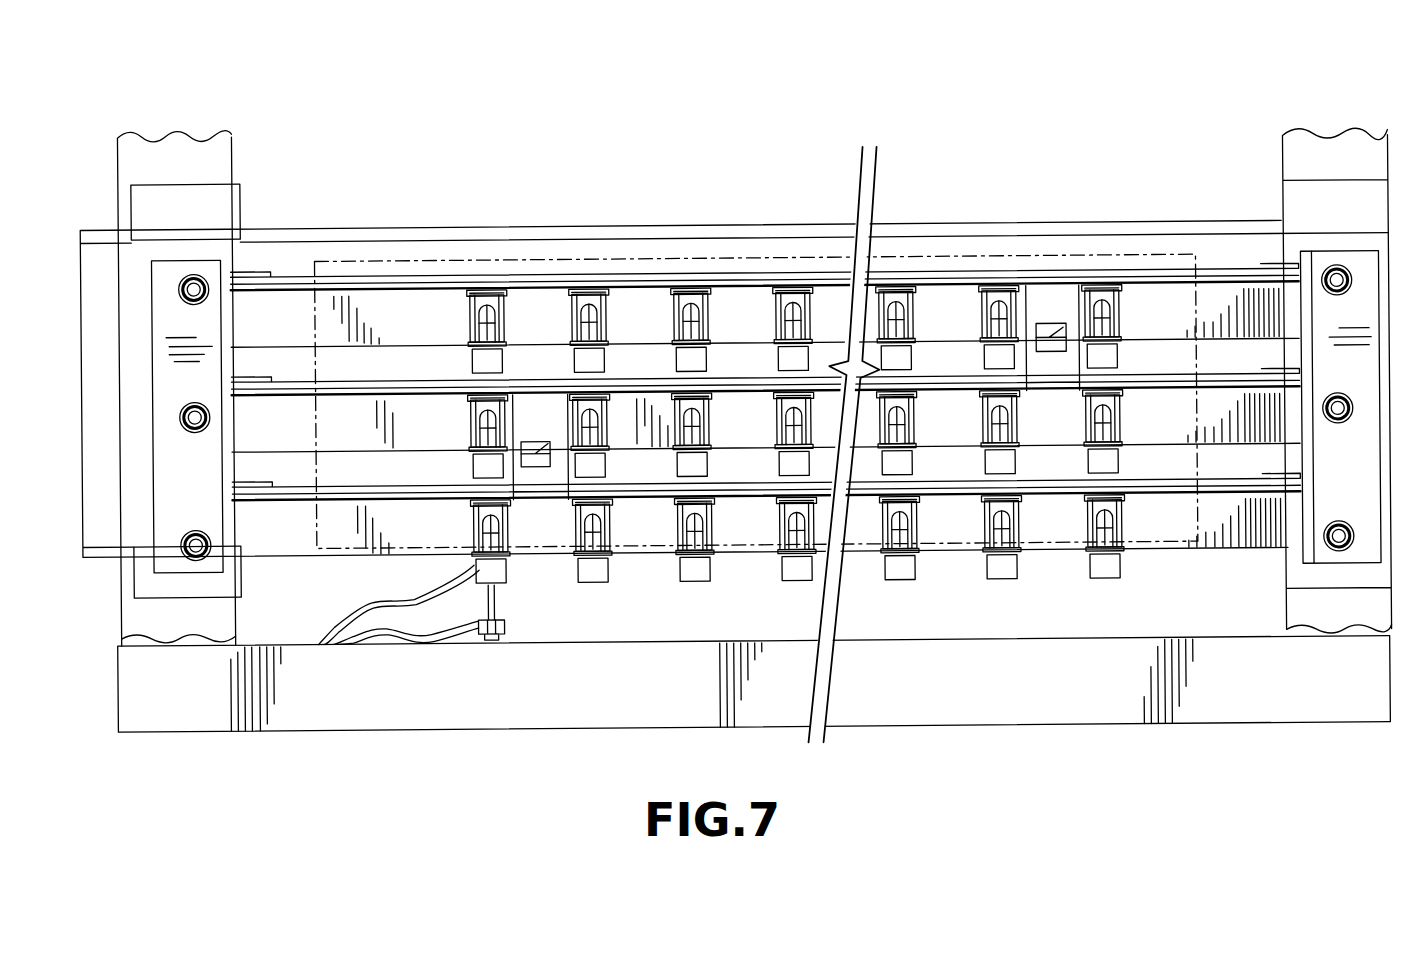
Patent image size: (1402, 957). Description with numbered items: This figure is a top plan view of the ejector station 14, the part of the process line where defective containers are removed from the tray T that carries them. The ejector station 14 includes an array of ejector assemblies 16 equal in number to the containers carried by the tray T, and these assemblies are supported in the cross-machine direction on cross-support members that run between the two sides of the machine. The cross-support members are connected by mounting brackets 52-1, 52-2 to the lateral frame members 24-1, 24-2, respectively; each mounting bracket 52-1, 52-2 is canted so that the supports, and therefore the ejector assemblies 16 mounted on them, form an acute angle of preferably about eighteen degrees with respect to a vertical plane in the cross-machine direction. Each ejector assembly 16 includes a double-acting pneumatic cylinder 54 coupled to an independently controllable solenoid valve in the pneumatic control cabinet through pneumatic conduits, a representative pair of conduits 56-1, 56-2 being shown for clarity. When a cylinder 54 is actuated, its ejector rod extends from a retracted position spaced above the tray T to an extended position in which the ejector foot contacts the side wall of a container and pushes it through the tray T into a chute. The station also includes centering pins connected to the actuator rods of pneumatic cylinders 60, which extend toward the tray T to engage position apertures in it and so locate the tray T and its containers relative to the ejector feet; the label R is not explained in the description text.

The ejector station 14 is at (735, 378).
The ejector assembly 16 is at (512, 342).
The lateral frame member 24-1 is at (1322, 150).
The lateral frame member 24-2 is at (222, 150).
The mounting bracket 52-1 is at (1362, 258).
The mounting bracket 52-2 is at (160, 315).
The double-acting pneumatic cylinder 54 is at (925, 418).
The pneumatic conduit 56-1 is at (388, 596).
The pneumatic conduit 56-2 is at (424, 648).
The pneumatic cylinder 60 is at (1065, 325).
The tray T is at (391, 262).
The row R is at (572, 272).